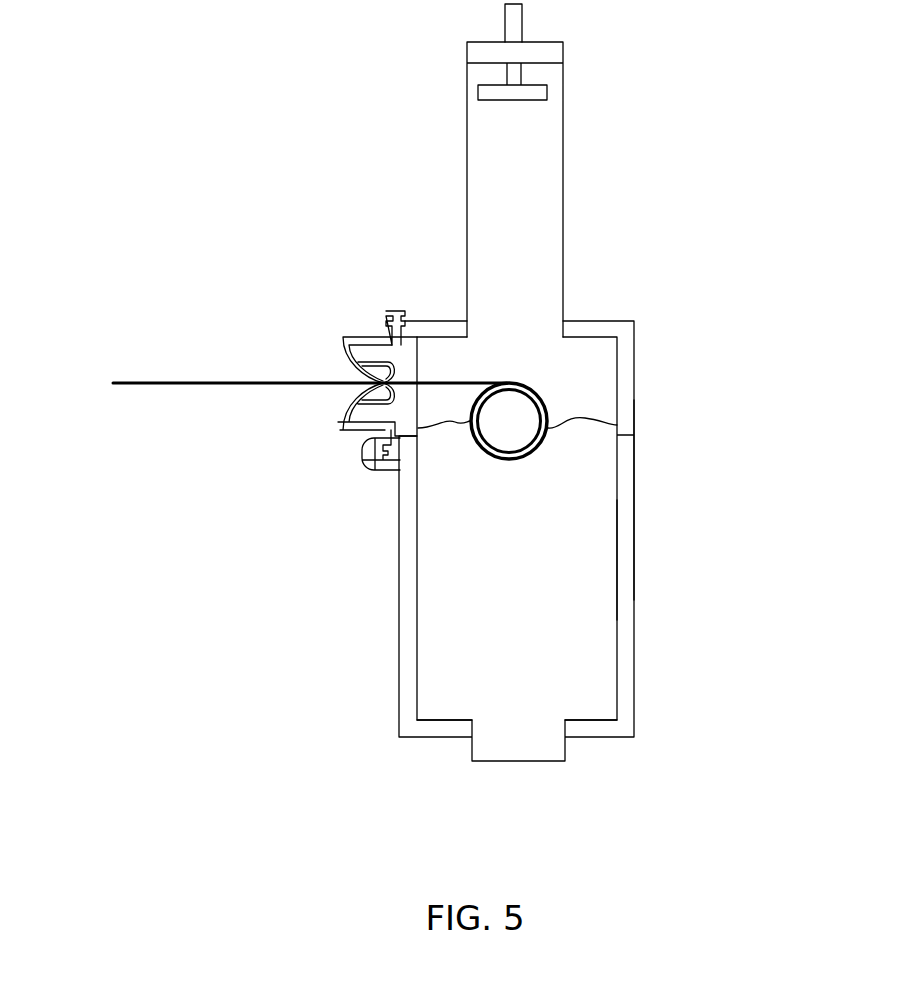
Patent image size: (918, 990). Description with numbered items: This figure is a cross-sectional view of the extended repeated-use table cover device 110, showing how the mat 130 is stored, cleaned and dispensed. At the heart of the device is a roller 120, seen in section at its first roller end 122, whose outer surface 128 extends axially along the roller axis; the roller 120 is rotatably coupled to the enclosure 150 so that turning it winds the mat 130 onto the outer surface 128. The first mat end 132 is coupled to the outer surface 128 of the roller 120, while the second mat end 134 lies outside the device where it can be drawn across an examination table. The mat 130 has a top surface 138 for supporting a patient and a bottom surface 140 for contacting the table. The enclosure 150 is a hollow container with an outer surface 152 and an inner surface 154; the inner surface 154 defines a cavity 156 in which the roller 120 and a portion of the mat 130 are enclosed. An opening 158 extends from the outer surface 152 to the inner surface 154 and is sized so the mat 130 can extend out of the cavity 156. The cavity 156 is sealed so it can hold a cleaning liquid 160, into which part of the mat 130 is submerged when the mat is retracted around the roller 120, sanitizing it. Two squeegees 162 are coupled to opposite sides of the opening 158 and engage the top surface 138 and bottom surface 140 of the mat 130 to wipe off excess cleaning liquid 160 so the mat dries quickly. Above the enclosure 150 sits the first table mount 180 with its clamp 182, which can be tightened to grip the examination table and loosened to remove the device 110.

The extended repeated-use table cover device 110 is at (226, 154).
The roller 120 is at (524, 415).
The first roller end 122 is at (495, 427).
The outer surface 128 is at (548, 422).
The mat 130 is at (177, 366).
The first mat end 132 is at (522, 380).
The second mat end 134 is at (113, 383).
The top surface 138 is at (235, 383).
The bottom surface 140 is at (199, 384).
The enclosure 150 is at (661, 592).
The outer surface 152 is at (634, 504).
The inner surface 154 is at (618, 552).
The cavity 156 is at (545, 640).
The opening 158 is at (392, 412).
The cleaning liquid 160 is at (570, 458).
The squeegee 162 is at (340, 360).
The first table mount 180 is at (570, 122).
The clamp 182 is at (530, 20).